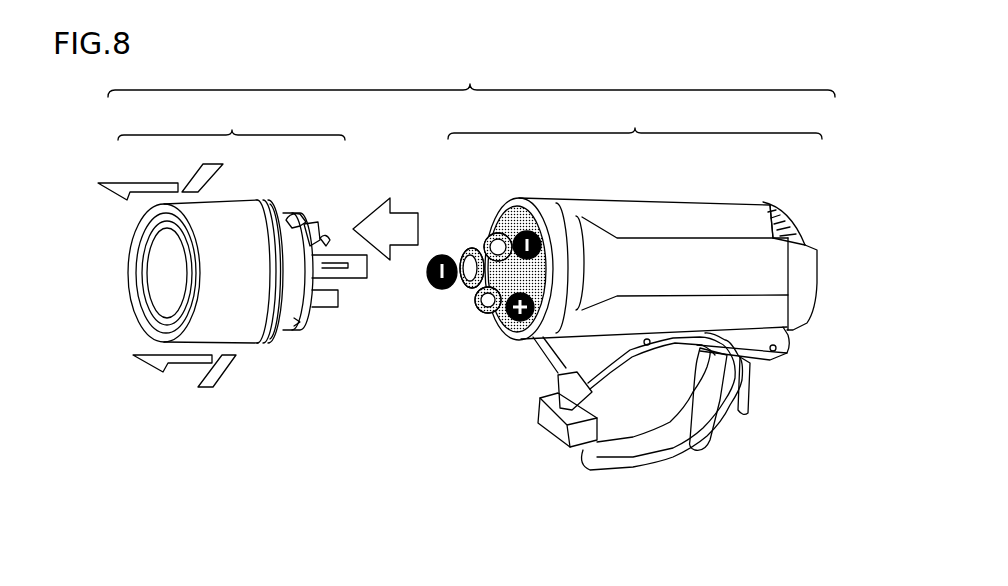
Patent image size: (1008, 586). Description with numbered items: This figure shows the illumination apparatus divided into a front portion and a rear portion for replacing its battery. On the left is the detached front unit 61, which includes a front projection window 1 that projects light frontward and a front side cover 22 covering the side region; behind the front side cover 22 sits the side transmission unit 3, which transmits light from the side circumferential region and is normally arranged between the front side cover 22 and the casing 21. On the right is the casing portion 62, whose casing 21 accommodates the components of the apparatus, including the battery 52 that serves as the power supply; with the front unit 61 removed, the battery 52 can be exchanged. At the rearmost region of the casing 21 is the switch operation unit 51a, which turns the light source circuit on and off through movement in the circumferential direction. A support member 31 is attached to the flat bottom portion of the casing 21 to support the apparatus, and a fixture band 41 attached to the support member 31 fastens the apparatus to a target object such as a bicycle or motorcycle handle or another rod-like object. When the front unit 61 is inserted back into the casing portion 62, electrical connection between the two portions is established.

The front projection window 1 is at (152, 273).
The front side cover 22 is at (228, 217).
The side transmission unit 3 is at (270, 331).
The front unit 61 is at (231, 122).
The casing portion 62 is at (635, 121).
The casing 21 is at (695, 220).
The switch operation unit 51a is at (790, 205).
The battery 52 is at (478, 312).
The support member 31 is at (556, 349).
The fixture band 41 is at (664, 485).